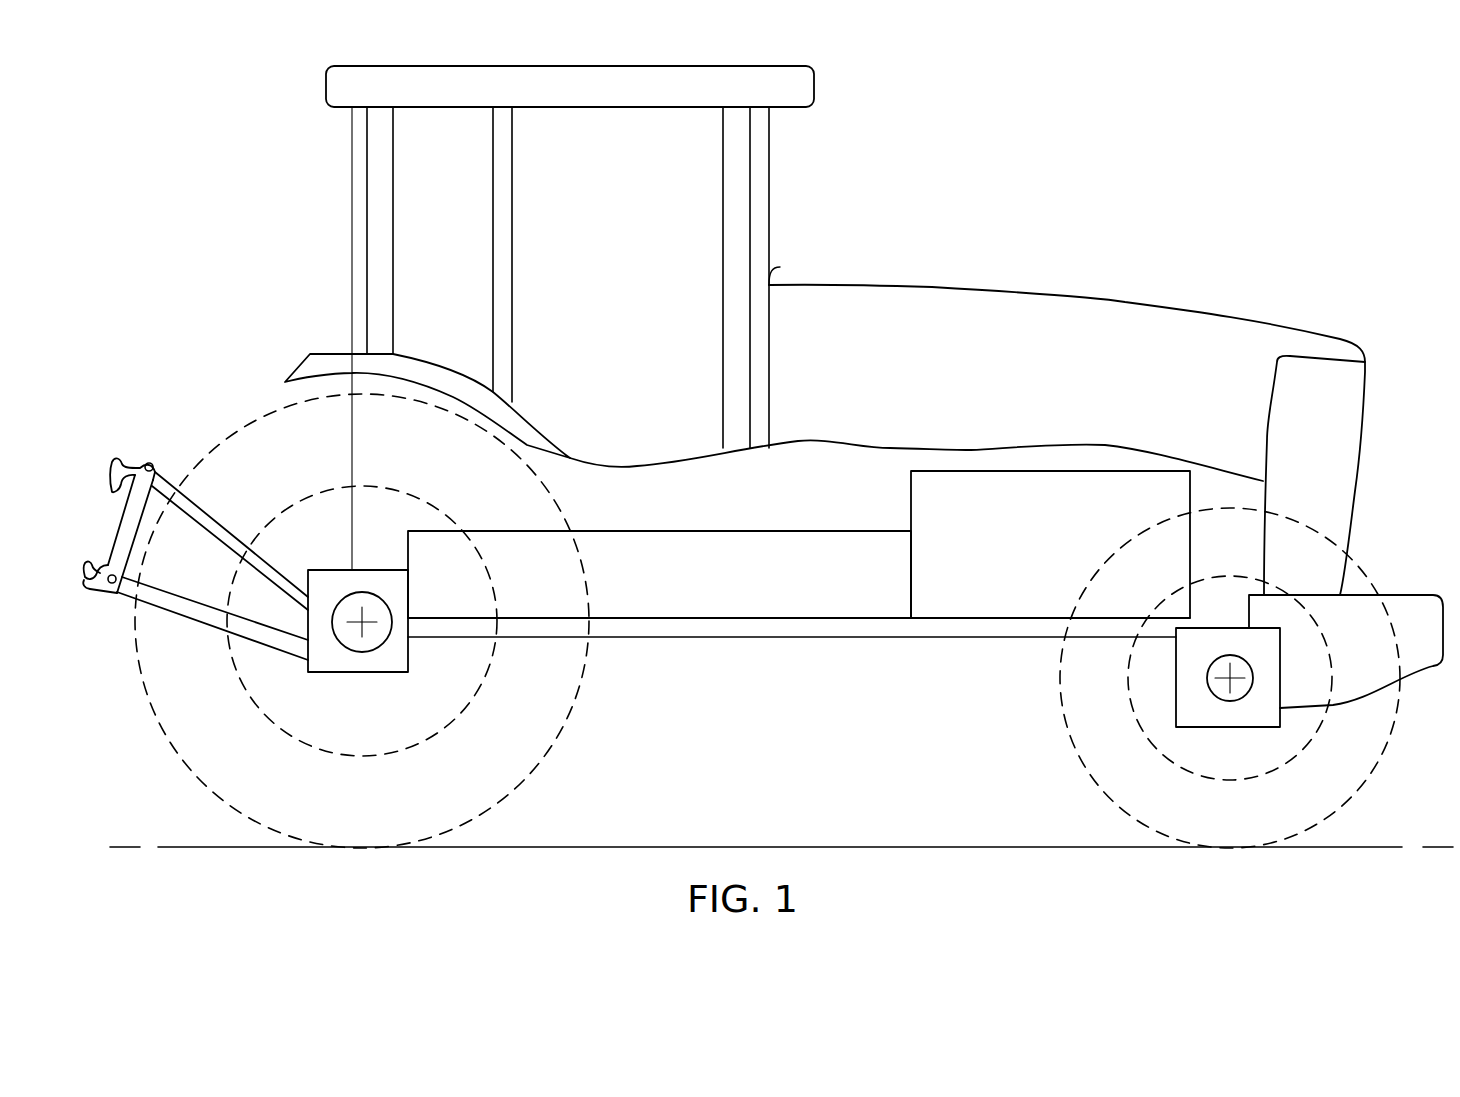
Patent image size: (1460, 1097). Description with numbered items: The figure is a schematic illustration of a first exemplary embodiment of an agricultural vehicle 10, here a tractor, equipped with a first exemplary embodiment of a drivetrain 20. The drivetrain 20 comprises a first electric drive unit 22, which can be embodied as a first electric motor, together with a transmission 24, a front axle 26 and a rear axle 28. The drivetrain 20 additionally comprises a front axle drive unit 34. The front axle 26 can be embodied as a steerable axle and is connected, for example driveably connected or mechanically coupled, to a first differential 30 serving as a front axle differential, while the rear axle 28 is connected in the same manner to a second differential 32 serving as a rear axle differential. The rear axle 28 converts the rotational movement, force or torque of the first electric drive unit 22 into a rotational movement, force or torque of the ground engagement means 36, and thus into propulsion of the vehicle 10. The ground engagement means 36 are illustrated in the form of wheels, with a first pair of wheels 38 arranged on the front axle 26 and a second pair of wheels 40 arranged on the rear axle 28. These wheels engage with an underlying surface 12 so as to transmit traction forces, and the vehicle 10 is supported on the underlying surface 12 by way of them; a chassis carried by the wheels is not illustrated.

The agricultural vehicle 10 is at (1103, 57).
The underlying surface 12 is at (493, 847).
The drivetrain 20 is at (751, 500).
The first electric drive unit 22 is at (659, 574).
The transmission 24 is at (1067, 558).
The front axle 26 is at (1230, 678).
The rear axle 28 is at (357, 620).
The first differential 30 is at (1257, 643).
The second differential 32 is at (377, 577).
The front axle drive unit 34 is at (713, 591).
The ground engagement means 36 is at (767, 621).
The first pair of wheels 38 is at (1130, 758).
The second pair of wheels 40 is at (523, 760).